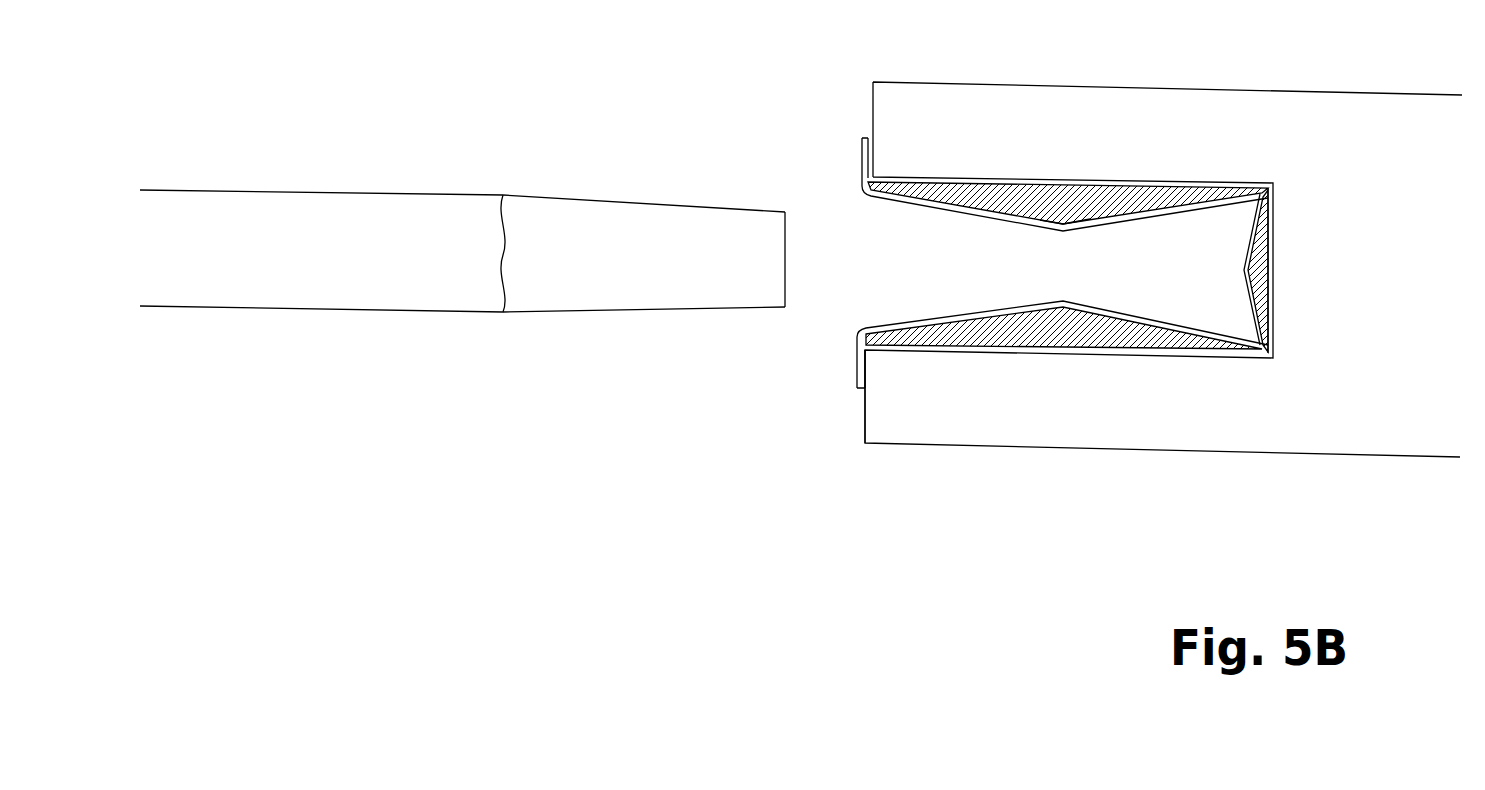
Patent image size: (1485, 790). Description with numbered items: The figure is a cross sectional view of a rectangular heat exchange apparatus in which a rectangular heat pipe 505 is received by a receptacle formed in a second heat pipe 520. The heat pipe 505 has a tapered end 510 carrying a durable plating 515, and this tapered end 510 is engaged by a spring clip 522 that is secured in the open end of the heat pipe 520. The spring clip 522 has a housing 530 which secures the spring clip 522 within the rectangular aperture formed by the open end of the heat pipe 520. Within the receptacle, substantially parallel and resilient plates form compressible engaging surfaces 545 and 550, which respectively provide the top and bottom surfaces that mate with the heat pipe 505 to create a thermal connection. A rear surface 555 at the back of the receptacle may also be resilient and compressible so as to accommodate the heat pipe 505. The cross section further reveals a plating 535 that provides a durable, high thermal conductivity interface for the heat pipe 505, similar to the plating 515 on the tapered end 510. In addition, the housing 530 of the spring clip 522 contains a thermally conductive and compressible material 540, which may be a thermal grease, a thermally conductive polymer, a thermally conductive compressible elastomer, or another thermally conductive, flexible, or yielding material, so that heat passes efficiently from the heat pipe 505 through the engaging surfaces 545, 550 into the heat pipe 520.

The rectangular heat pipe 505 is at (313, 190).
The durable plating 515 is at (578, 209).
The tapered end 510 is at (745, 198).
The heat pipe 520 is at (1007, 82).
The spring clip 522 is at (882, 289).
The housing 530 is at (1033, 180).
The thermally conductive and compressible material 540 is at (1085, 199).
The compressible engaging surface 545 is at (1073, 237).
The plating 535 is at (972, 310).
The compressible engaging surface 550 is at (1074, 303).
The rear surface 555 is at (1238, 262).